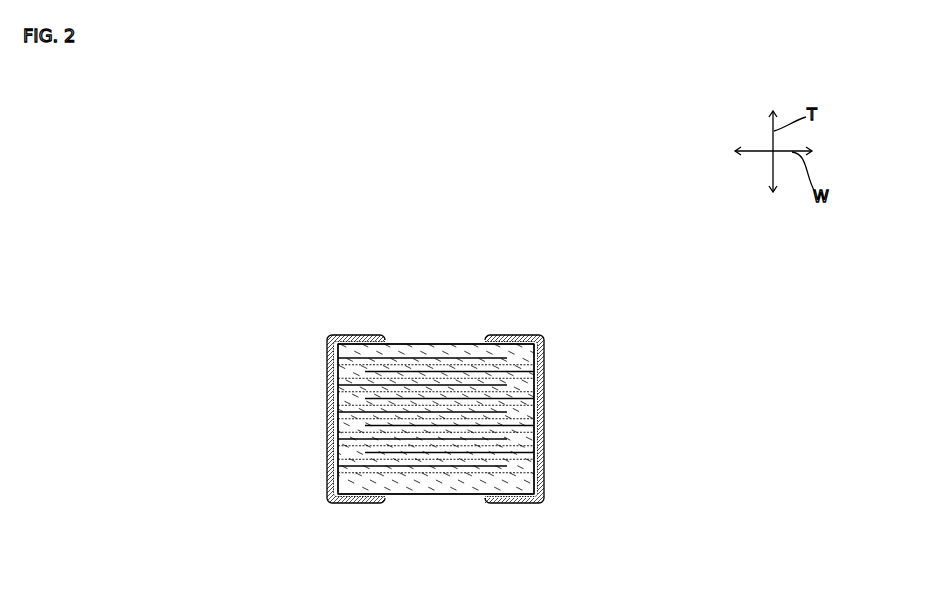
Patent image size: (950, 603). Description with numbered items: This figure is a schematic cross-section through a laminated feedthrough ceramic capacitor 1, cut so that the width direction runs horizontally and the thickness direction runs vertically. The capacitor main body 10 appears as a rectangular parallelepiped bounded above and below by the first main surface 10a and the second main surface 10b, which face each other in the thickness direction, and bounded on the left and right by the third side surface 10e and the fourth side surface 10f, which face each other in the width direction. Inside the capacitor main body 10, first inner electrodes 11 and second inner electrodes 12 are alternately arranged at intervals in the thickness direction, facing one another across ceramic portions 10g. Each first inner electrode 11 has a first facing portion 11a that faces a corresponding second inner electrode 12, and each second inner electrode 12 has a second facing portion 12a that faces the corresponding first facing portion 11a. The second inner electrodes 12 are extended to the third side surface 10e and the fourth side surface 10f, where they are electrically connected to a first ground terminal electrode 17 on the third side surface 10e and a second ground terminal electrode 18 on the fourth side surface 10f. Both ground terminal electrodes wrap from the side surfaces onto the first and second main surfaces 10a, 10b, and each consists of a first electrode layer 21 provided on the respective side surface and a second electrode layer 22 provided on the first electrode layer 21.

The laminated feedthrough ceramic capacitor 1 is at (446, 407).
The capacitor main body 10 is at (446, 418).
The first main surface 10a is at (430, 347).
The second main surface 10b is at (403, 494).
The third side surface 10e is at (340, 472).
The fourth side surface 10f is at (535, 472).
The ceramic portion 10g is at (475, 466).
The first inner electrode 11 is at (437, 467).
The first facing portion 11a is at (410, 372).
The second inner electrode 12 is at (363, 467).
The second facing portion 12a is at (393, 363).
The first ground terminal electrode 17 is at (326, 398).
The second ground terminal electrode 18 is at (545, 382).
The first electrode layer 21 is at (329, 360).
The second electrode layer 22 is at (327, 347).